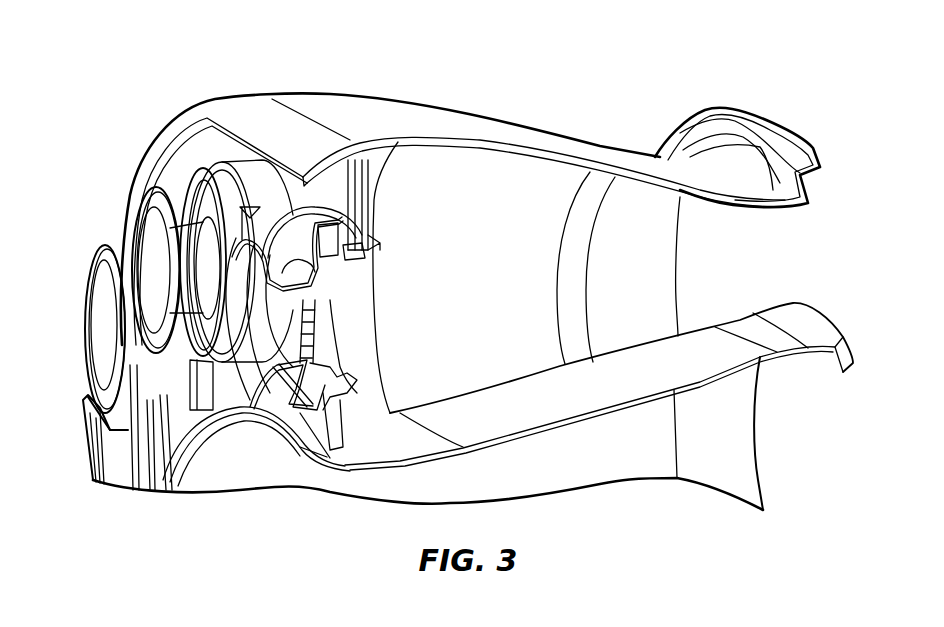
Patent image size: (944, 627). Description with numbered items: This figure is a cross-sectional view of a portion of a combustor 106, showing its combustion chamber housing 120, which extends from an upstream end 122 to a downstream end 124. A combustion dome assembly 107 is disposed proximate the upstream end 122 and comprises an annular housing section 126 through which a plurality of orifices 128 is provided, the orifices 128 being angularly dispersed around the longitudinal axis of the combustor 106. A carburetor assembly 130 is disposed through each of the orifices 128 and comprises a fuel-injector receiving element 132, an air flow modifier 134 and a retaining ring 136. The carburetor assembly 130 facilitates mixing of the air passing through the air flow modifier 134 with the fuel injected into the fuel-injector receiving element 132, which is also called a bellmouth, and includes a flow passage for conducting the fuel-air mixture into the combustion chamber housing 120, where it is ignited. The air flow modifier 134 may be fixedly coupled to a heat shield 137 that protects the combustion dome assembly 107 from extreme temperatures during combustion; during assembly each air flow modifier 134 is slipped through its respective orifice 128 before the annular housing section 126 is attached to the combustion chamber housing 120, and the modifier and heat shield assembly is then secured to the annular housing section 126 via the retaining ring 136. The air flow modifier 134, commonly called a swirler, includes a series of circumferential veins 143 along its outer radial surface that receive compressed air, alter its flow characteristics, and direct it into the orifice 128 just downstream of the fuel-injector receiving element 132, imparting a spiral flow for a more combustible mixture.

The combustor 106 is at (551, 64).
The combustion dome assembly 107 is at (136, 122).
The combustion chamber housing 120 is at (473, 127).
The upstream end 122 is at (242, 122).
The downstream end 124 is at (780, 125).
The annular housing section 126 is at (283, 200).
The orifices 128 is at (167, 267).
The carburetor assembly 130 is at (135, 490).
The fuel-injector receiving element 132 is at (83, 402).
The air flow modifier 134 is at (332, 240).
The retaining ring 136 is at (320, 457).
The heat shield 137 is at (370, 187).
The circumferential veins 143 is at (330, 355).